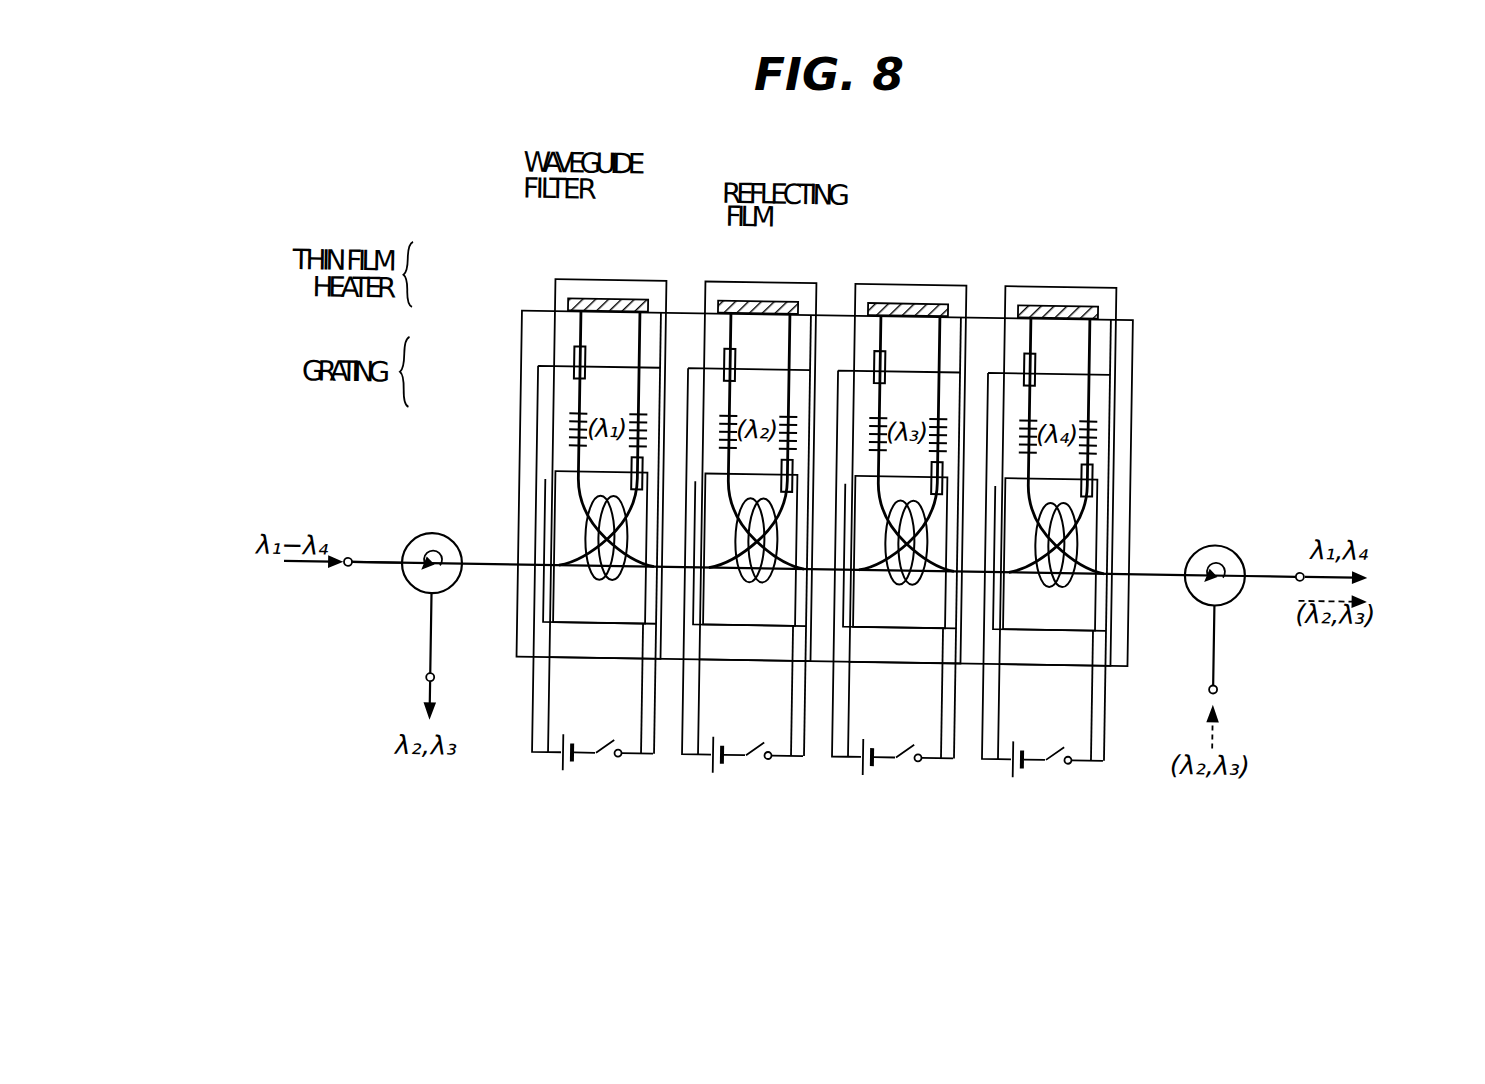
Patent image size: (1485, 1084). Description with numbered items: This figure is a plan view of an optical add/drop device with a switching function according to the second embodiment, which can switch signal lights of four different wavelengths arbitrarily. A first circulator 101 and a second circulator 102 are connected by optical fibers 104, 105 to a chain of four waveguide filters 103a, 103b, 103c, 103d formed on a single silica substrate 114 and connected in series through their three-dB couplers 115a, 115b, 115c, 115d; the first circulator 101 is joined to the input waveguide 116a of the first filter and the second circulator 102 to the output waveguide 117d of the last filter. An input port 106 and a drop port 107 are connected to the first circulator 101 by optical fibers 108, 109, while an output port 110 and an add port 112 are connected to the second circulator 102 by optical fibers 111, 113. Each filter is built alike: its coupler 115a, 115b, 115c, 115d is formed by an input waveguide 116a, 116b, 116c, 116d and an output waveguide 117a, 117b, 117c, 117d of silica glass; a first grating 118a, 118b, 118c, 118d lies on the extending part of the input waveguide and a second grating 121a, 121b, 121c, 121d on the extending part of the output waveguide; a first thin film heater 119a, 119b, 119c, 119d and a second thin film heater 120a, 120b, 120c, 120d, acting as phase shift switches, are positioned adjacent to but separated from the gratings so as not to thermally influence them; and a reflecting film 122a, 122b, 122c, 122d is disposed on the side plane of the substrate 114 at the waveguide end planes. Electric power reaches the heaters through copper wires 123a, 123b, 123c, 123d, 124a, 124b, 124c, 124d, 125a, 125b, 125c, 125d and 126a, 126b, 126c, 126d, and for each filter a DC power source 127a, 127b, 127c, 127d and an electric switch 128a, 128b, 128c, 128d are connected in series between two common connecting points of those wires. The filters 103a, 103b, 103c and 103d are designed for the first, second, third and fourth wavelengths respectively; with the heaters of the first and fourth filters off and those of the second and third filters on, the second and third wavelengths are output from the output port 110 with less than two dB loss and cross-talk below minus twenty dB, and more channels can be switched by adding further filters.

The first circulator 101 is at (425, 538).
The second circulator 102 is at (1216, 536).
The waveguide filter 103a is at (570, 280).
The waveguide filter 103b is at (730, 280).
The waveguide filter 103c is at (880, 280).
The waveguide filter 103d is at (1030, 280).
The optical fiber 104 is at (482, 560).
The optical fiber 105 is at (1150, 562).
The input port 106 is at (347, 576).
The drop port 107 is at (429, 685).
The optical fiber 108 is at (362, 562).
The optical fiber 109 is at (435, 652).
The output port 110 is at (1300, 558).
The optical fiber 111 is at (1262, 556).
The add port 112 is at (1222, 680).
The optical fiber 113 is at (1220, 627).
The SiO2 substrate 114 is at (1120, 325).
The 3 dB coupler 115a is at (607, 580).
The 3 dB coupler 115b is at (757, 580).
The 3 dB coupler 115c is at (907, 580).
The 3 dB coupler 115d is at (1057, 580).
The input waveguide 116a is at (570, 572).
The input waveguide 116b is at (720, 572).
The input waveguide 116c is at (870, 572).
The input waveguide 116d is at (1020, 572).
The output waveguide 117a is at (635, 572).
The output waveguide 117b is at (785, 572).
The output waveguide 117c is at (935, 572).
The output waveguide 117d is at (1085, 572).
The first grating 118a is at (565, 430).
The first grating 118b is at (733, 412).
The first grating 118c is at (883, 412).
The first grating 118d is at (1033, 412).
The first thin film heater 119a is at (570, 360).
The first thin film heater 119b is at (728, 350).
The first thin film heater 119c is at (878, 350).
The first thin film heater 119d is at (1028, 350).
The second thin film heater 120a is at (638, 457).
The second thin film heater 120b is at (781, 466).
The second thin film heater 120c is at (931, 466).
The second thin film heater 120d is at (1092, 462).
The second grating 121a is at (627, 417).
The second grating 121b is at (781, 415).
The second grating 121c is at (931, 415).
The second grating 121d is at (1081, 415).
The reflecting film 122a is at (621, 298).
The reflecting film 122b is at (753, 299).
The reflecting film 122c is at (903, 299).
The reflecting film 122d is at (1053, 299).
The copper wire 123a is at (532, 718).
The copper wire 123b is at (687, 695).
The copper wire 123c is at (837, 695).
The copper wire 123d is at (987, 694).
The copper wire 124a is at (657, 717).
The copper wire 124b is at (809, 765).
The copper wire 124c is at (959, 765).
The copper wire 124d is at (1109, 686).
The copper wire 125a is at (550, 735).
The copper wire 125b is at (702, 673).
The copper wire 125c is at (852, 673).
The copper wire 125d is at (1003, 676).
The copper wire 126a is at (645, 683).
The copper wire 126b is at (795, 745).
The copper wire 126c is at (945, 745).
The copper wire 126d is at (1096, 724).
The DC power source 127a is at (582, 762).
The DC power source 127b is at (733, 768).
The DC power source 127c is at (883, 768).
The DC power source 127d is at (1040, 770).
The electric switch 128a is at (624, 758).
The electric switch 128b is at (773, 758).
The electric switch 128c is at (923, 758).
The electric switch 128d is at (1073, 758).